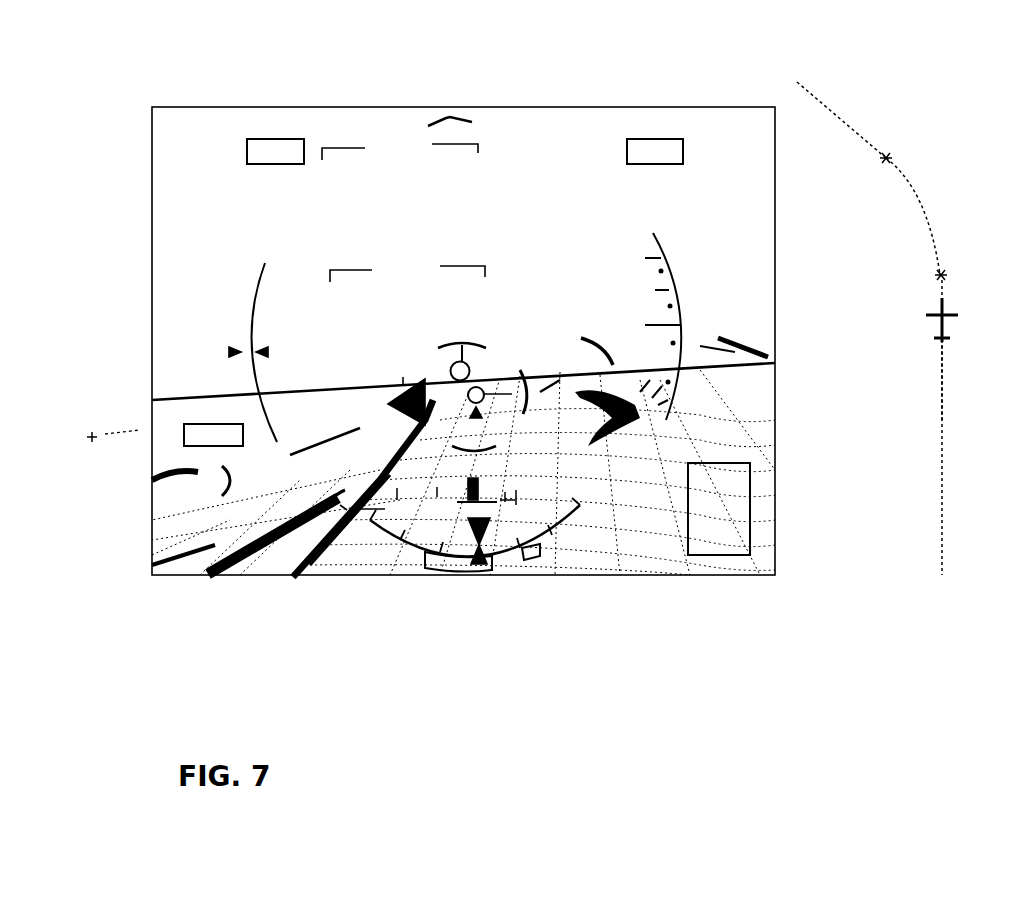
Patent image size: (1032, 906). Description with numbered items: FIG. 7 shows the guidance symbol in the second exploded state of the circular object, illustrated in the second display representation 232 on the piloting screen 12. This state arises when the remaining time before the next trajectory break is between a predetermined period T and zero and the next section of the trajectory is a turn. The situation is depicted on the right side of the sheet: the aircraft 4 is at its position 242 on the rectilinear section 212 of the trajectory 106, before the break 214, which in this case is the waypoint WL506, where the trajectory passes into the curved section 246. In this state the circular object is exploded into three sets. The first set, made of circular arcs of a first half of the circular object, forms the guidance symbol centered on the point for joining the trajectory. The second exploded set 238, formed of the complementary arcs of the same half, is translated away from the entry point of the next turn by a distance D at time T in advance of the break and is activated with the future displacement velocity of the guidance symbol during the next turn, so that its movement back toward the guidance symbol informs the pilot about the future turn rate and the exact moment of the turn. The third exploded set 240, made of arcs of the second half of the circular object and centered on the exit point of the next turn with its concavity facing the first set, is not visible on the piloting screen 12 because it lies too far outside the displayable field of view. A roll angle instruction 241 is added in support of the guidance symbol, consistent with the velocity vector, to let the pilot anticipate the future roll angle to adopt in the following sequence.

The piloting screen 12 is at (570, 121).
The second display representation 232 is at (463, 332).
The roll angle instruction 241 is at (402, 551).
The second exploded set 238 is at (609, 446).
The third exploded set 240 is at (59, 412).
The trajectory 106 is at (942, 507).
The curved section 246 is at (928, 217).
The break 214 is at (936, 272).
The aircraft 4 is at (936, 328).
The position 242 is at (948, 328).
The rectilinear section 212 is at (939, 420).